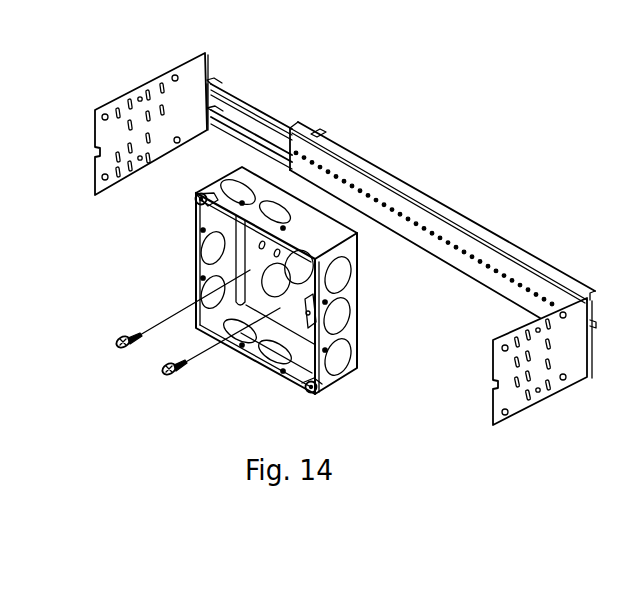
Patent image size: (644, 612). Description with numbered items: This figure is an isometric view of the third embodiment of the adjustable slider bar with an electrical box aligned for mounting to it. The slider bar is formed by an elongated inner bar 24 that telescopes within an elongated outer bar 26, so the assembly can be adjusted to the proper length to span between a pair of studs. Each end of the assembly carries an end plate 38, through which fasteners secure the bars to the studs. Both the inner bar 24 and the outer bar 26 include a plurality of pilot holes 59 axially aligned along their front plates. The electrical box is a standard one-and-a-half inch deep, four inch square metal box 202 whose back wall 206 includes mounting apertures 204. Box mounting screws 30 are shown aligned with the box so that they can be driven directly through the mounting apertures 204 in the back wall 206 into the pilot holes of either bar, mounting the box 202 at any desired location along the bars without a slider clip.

The elongated inner bar 24 is at (272, 105).
The elongated outer bar 26 is at (472, 215).
The box mounting screws 30 is at (128, 334).
The end plates 38 is at (194, 116).
The pilot holes 59 is at (455, 250).
The metal box 202 is at (342, 389).
The mounting apertures 204 is at (279, 251).
The back wall 206 is at (259, 247).